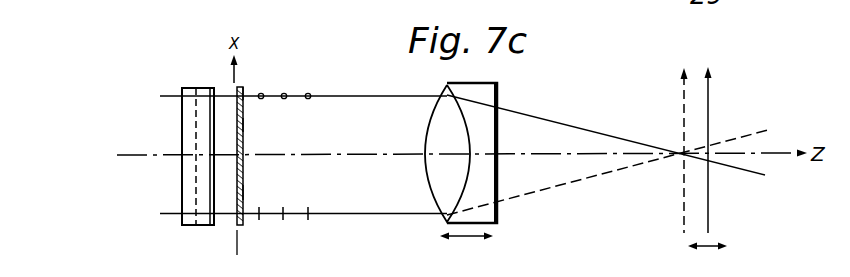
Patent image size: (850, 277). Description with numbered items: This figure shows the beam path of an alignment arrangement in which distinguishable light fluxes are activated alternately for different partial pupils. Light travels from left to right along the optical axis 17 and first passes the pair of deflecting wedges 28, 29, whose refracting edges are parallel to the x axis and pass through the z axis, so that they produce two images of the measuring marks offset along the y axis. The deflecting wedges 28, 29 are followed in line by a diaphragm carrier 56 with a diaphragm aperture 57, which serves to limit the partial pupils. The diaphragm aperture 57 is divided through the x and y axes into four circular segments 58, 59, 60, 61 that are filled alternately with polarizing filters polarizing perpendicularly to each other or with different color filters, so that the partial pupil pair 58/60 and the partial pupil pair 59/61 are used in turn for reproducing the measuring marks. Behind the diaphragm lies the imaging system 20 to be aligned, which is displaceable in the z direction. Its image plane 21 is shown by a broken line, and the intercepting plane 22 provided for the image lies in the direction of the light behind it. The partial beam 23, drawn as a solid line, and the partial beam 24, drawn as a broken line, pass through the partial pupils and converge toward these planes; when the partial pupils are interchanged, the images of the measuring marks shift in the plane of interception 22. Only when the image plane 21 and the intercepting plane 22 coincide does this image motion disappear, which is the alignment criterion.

The optical axis 17 is at (778, 153).
The imaging system 20 is at (485, 93).
The image plane 21 is at (682, 98).
The intercepting plane 22 is at (710, 97).
The partial beam 23 is at (587, 137).
The partial beam 24 is at (589, 167).
The deflecting wedge 28 is at (192, 127).
The deflecting wedge 29 is at (154, 156).
The diaphragm carrier 56 is at (236, 87).
The diaphragm aperture 57 is at (244, 97).
The circular segment 58 is at (244, 125).
The circular segment 59 is at (305, 75).
The circular segment 60 is at (307, 233).
The circular segment 61 is at (244, 192).